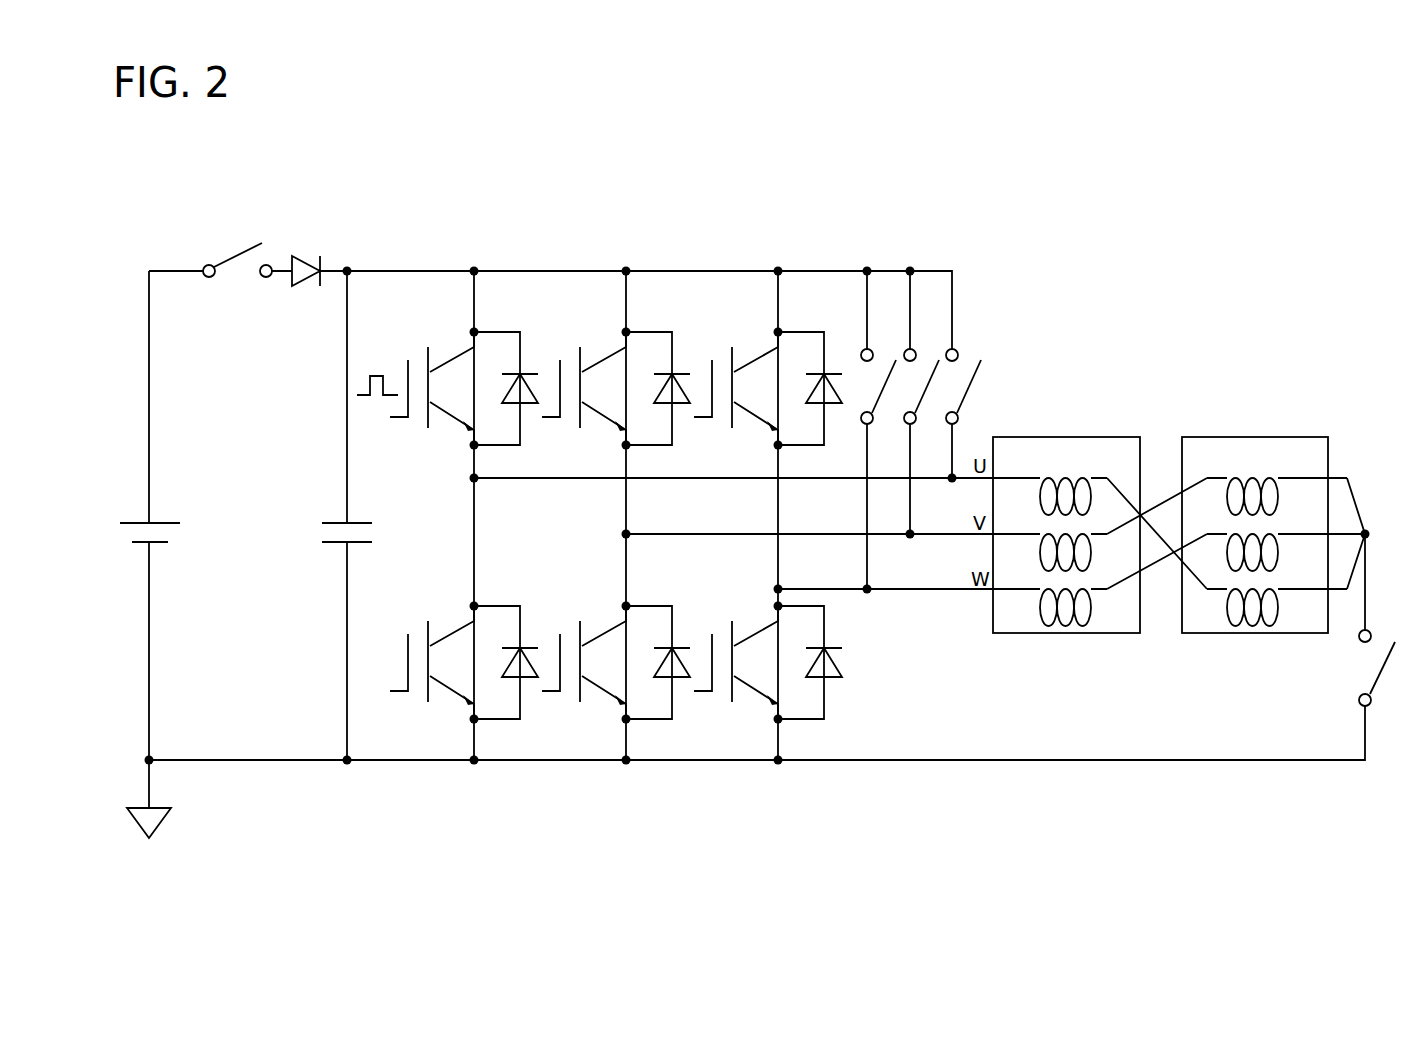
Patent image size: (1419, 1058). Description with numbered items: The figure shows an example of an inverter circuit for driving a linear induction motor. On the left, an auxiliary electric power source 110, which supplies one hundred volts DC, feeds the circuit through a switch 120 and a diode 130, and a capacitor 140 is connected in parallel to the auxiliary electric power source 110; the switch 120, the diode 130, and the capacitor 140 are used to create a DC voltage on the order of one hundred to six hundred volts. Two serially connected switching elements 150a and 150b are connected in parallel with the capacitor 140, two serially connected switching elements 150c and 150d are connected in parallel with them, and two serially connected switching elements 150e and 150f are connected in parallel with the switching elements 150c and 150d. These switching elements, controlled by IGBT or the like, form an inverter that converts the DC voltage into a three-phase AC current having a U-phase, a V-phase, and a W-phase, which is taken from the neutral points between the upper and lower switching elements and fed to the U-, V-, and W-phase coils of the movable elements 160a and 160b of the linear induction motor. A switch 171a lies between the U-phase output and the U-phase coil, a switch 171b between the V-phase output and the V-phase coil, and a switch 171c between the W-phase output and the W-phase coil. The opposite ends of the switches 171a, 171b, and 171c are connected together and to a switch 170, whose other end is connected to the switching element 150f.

The auxiliary electric power source 110 is at (157, 545).
The switch 120 is at (237, 250).
The diode 130 is at (308, 262).
The capacitor 140 is at (340, 522).
The switching element 150a is at (503, 330).
The switching element 150b is at (498, 720).
The switching element 150c is at (657, 330).
The switching element 150d is at (660, 720).
The switching element 150e is at (795, 330).
The switching element 150f is at (790, 720).
The movable element 160a is at (1093, 437).
The movable element 160b is at (1282, 437).
The switch 170 is at (1386, 665).
The switch 171a is at (872, 350).
The switch 171b is at (915, 350).
The switch 171c is at (958, 352).